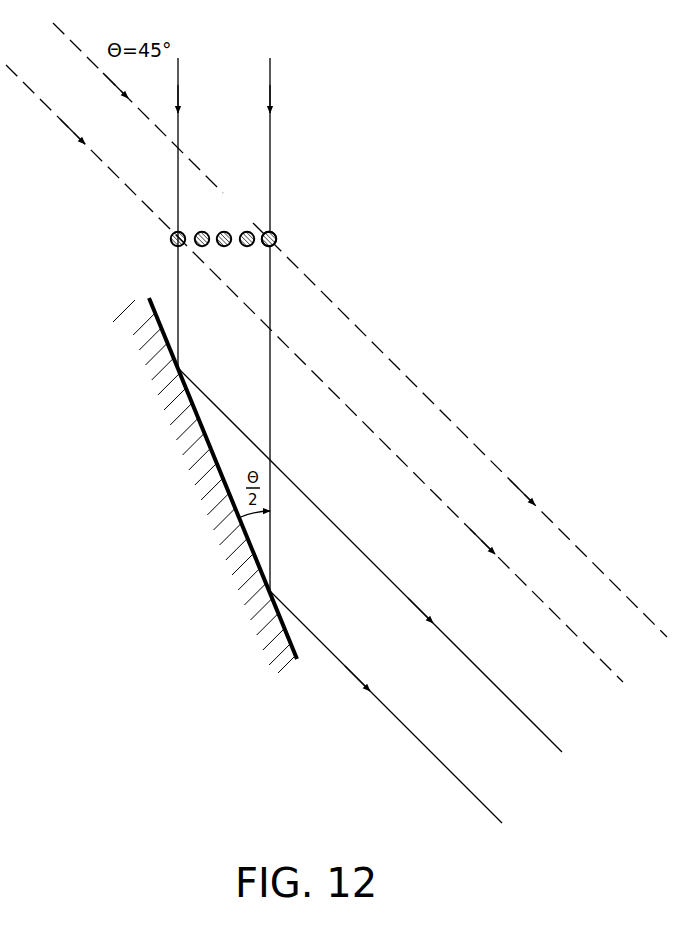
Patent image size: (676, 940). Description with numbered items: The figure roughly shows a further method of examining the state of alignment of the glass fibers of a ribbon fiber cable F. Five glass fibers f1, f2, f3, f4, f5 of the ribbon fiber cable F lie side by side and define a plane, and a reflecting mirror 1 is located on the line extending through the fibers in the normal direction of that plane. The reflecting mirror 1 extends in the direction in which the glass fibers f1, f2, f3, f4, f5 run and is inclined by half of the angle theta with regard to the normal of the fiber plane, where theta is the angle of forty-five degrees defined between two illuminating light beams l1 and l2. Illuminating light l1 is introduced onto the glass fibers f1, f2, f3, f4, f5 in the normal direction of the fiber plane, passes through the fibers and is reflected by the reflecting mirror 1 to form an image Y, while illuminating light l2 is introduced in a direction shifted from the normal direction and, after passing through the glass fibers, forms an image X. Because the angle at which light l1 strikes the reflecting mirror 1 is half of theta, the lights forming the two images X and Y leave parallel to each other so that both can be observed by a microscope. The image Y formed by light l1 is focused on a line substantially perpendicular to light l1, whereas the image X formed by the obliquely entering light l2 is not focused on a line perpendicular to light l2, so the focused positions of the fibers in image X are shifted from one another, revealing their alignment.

The reflecting mirror 1 is at (255, 622).
The ribbon fiber cable F is at (225, 241).
The glass fiber f1 is at (275, 233).
The glass fiber f2 is at (246, 232).
The glass fiber f3 is at (225, 247).
The glass fiber f4 is at (201, 232).
The glass fiber f5 is at (170, 239).
The illuminating light l1 is at (360, 330).
The illuminating light l2 is at (314, 355).
The image X is at (654, 664).
The image Y is at (370, 595).